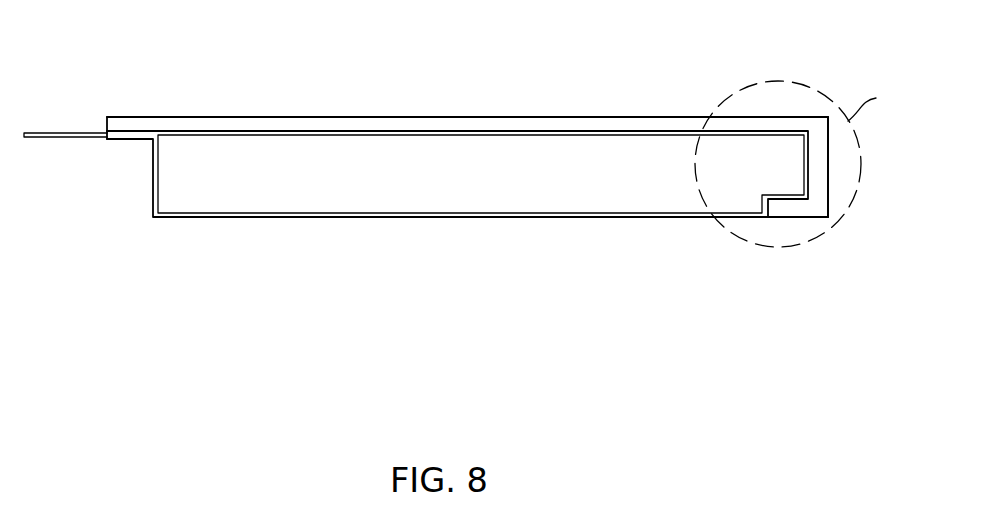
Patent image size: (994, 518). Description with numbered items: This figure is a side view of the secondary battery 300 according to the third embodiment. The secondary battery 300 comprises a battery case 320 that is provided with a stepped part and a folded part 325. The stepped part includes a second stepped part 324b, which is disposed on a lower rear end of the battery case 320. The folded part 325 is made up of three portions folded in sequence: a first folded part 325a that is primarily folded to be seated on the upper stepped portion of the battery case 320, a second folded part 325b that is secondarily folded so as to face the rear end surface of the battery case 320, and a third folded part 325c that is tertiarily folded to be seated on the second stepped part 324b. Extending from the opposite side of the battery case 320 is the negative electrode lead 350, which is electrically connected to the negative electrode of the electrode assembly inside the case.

The secondary battery 300 is at (800, 29).
The battery case 320 is at (274, 239).
The second stepped part 324b is at (786, 181).
The folded part 325 is at (516, 163).
The first folded part 325a is at (670, 117).
The second folded part 325b is at (821, 182).
The third folded part 325c is at (802, 217).
The negative electrode lead 350 is at (44, 133).